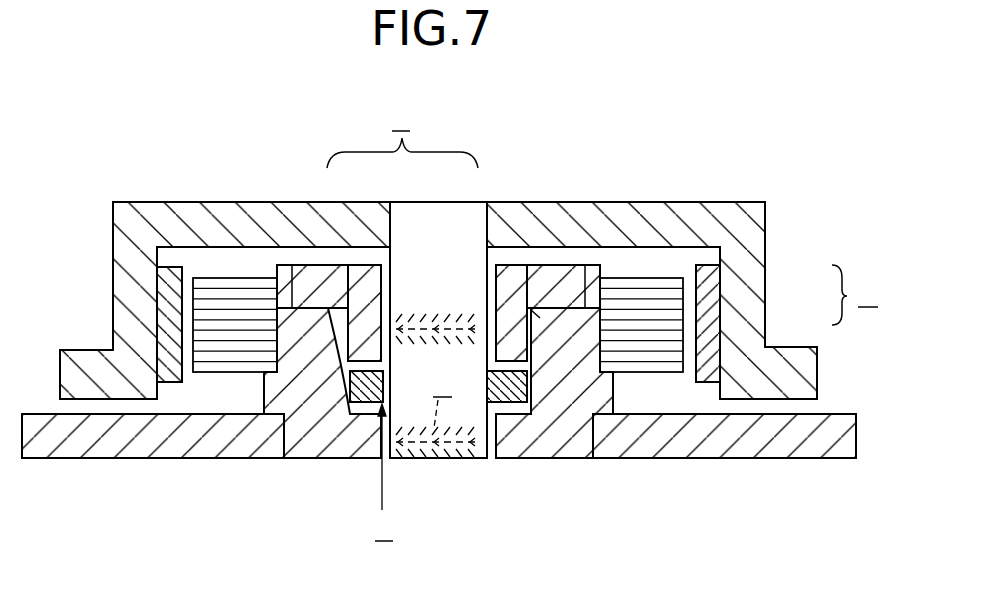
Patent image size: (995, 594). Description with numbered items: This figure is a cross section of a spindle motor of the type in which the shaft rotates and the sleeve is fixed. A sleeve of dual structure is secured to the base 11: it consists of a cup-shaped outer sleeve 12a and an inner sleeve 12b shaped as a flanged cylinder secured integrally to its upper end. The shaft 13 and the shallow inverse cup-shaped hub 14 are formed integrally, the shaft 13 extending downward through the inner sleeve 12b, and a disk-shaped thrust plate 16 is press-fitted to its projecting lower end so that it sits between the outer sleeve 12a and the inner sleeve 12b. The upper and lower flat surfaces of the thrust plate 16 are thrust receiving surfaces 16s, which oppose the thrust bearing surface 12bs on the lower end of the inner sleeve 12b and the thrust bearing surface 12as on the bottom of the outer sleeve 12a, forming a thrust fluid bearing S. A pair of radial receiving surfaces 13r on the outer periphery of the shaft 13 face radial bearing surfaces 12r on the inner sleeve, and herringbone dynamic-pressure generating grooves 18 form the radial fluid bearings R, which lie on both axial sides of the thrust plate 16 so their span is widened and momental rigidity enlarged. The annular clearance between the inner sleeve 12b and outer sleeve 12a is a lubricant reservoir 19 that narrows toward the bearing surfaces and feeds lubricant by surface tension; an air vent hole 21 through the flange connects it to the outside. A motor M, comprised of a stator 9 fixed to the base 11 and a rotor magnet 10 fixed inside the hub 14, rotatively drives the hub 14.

The stator 9 is at (660, 284).
The rotor magnet 10 is at (707, 315).
The base 11 is at (857, 437).
The outer sleeve 12a is at (548, 440).
The thrust bearing surface 12as is at (525, 416).
The inner sleeve 12b is at (500, 282).
The thrust bearing surface 12bs is at (504, 363).
The radial bearing surfaces 12r is at (384, 338).
The shaft 13 is at (470, 245).
The radial receiving surfaces 13r is at (391, 336).
The hub 14 is at (688, 215).
The thrust plate 16 is at (370, 388).
The thrust receiving surfaces 16s is at (360, 405).
The dynamic-pressure generating grooves 18 is at (453, 316).
The lubricant reservoir 19 is at (535, 320).
The air vent hole 21 is at (537, 282).
The radial fluid bearing R is at (402, 264).
The thrust fluid bearing S is at (384, 474).
The motor M is at (855, 295).